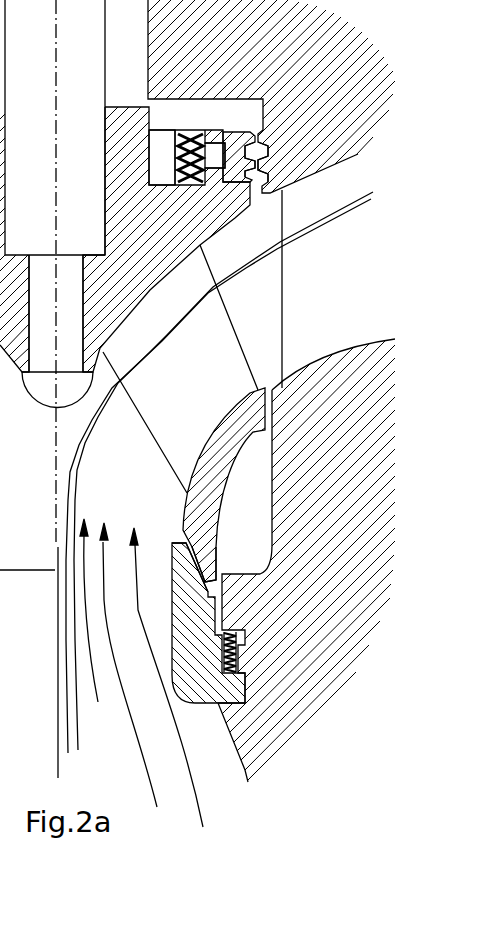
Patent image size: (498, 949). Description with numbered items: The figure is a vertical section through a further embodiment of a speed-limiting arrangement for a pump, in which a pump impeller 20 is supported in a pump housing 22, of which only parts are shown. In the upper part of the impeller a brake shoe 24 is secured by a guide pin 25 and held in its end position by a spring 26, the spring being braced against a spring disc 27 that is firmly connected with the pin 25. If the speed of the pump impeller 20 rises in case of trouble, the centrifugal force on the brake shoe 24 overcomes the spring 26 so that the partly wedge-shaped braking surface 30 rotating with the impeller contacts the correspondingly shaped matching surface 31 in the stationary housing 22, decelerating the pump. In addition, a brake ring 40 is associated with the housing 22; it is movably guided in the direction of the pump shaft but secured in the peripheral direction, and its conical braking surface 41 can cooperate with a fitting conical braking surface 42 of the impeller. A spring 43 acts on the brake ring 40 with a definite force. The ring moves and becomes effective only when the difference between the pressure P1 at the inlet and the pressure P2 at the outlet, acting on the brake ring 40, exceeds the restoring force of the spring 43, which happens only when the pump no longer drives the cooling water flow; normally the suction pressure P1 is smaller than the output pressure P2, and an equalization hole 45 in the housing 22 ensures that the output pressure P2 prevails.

The pump housing 22 is at (271, 391).
The pump impeller 20 is at (133, 285).
The spring disc 27 is at (160, 142).
The spring 26 is at (192, 140).
The guide pin 25 is at (213, 160).
The brake shoe 24 is at (240, 142).
The braking surface 30 is at (257, 168).
The matching surface 31 is at (272, 183).
The equalization hole 45 is at (260, 577).
The brake ring 40 is at (202, 685).
The conical braking surface 41 is at (195, 555).
The conical braking surface 42 is at (183, 556).
The spring 43 is at (222, 632).
The pressure at the pump inlet P1 is at (141, 673).
The pressure at the pump outlet P2 is at (358, 245).